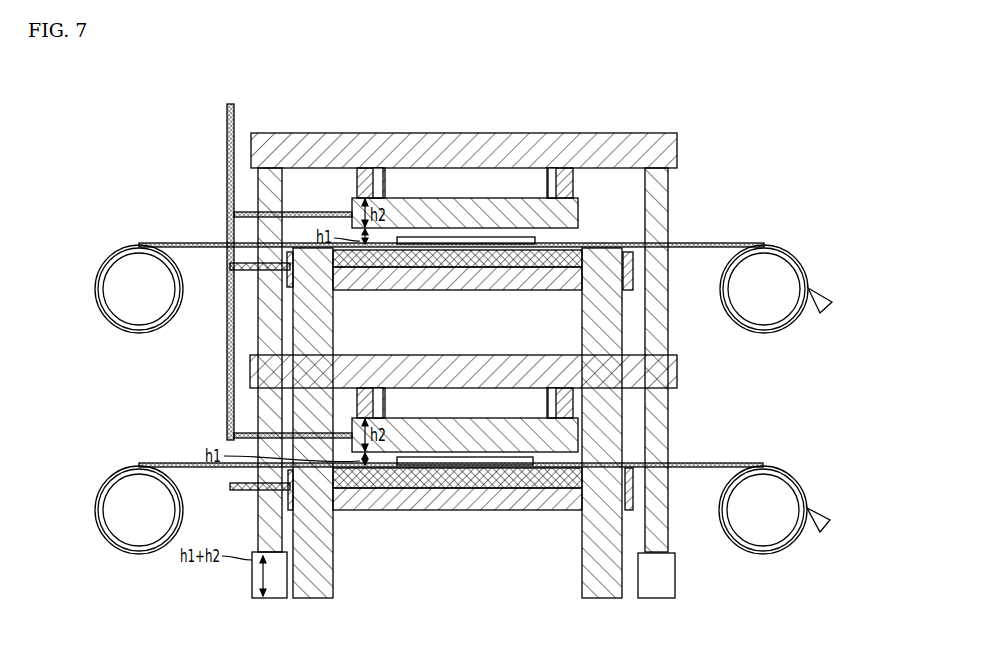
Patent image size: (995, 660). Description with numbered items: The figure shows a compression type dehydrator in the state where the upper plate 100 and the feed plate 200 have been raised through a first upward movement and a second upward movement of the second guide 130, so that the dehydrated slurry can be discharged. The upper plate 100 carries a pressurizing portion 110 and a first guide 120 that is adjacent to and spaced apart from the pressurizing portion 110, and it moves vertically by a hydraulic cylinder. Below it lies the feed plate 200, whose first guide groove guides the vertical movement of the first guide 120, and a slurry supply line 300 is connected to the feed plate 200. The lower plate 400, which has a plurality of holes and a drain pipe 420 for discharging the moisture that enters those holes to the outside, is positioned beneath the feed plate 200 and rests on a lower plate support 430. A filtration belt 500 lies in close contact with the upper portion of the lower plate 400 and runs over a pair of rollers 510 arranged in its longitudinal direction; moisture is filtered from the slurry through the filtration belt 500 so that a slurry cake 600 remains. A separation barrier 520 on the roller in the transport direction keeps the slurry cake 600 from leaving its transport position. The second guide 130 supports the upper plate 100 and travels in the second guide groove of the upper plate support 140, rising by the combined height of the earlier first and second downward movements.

The upper plate 100 is at (313, 133).
The pressurizing portion 110 is at (548, 198).
The first guide 120 is at (357, 185).
The second guide 130 is at (258, 325).
The upper plate support 140 is at (252, 575).
The feed plate 200 is at (578, 217).
The slurry supply line 300 is at (227, 210).
The lower plate 400 is at (522, 290).
The drain pipe 420 is at (400, 290).
The lower plate support 430 is at (333, 555).
The filtration belt 500 is at (730, 245).
The rollers 510 is at (803, 262).
The separation barrier 520 is at (832, 300).
The slurry cake 600 is at (535, 240).